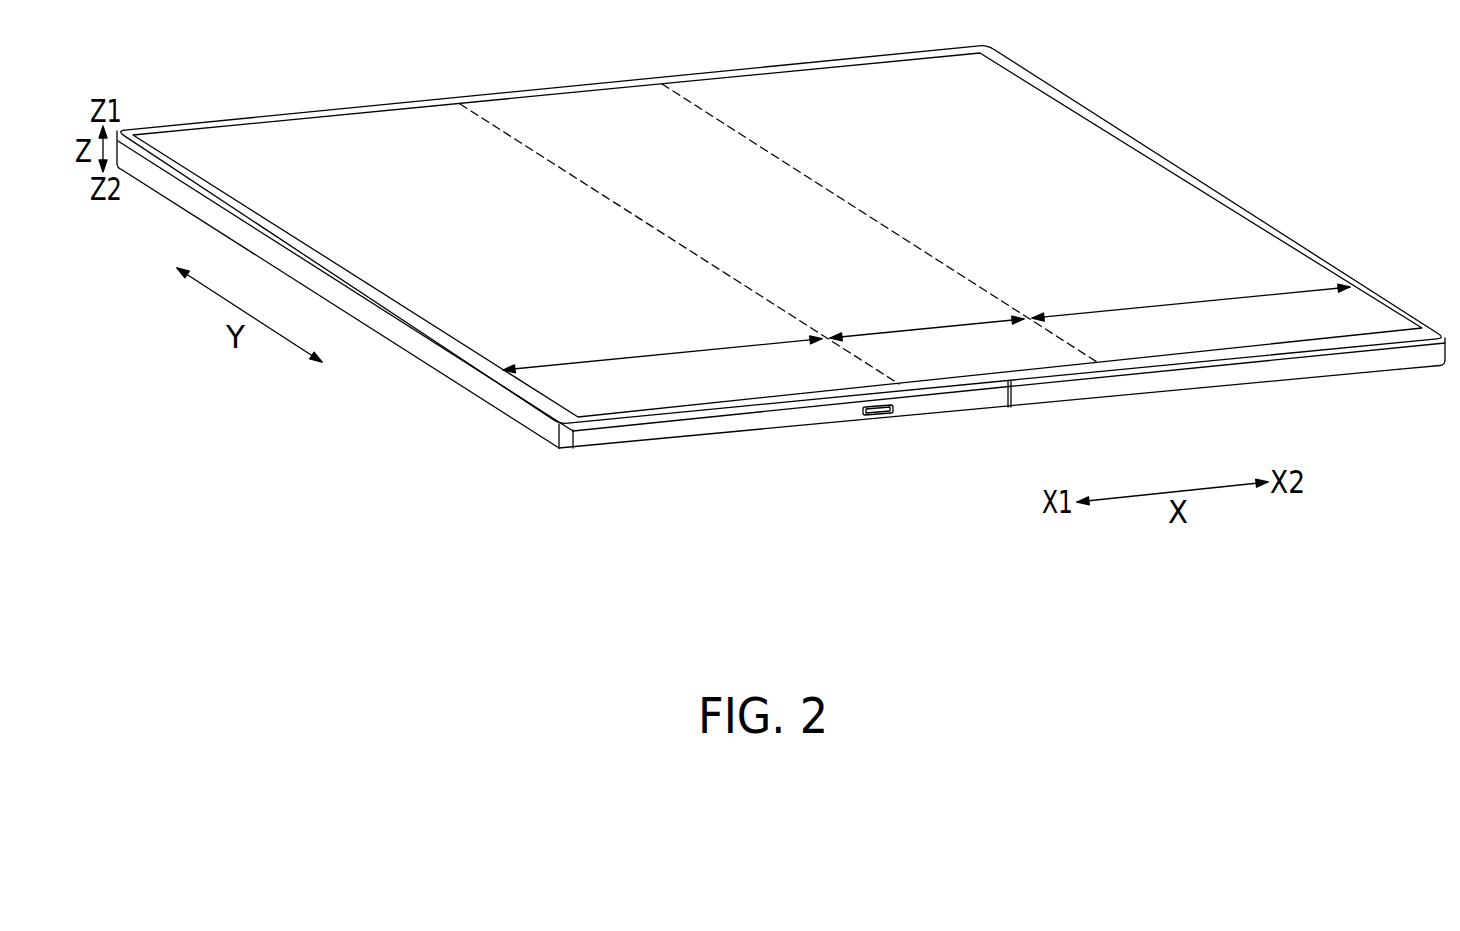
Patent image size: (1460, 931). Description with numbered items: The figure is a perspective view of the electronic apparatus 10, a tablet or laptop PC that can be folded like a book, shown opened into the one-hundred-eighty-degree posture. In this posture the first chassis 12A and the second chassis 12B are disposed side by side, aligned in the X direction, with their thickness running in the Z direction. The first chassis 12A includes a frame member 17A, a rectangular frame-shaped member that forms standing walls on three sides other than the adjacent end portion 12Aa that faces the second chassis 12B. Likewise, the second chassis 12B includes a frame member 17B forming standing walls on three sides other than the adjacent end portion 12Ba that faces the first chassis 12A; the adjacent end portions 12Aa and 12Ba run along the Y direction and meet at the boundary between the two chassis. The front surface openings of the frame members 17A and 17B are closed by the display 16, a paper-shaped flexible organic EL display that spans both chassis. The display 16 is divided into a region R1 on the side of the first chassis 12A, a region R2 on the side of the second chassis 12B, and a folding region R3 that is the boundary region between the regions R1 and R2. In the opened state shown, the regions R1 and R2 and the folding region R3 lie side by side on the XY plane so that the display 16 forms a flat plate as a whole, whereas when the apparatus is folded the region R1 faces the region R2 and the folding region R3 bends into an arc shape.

The electronic apparatus 10 is at (165, 34).
The display 16 is at (1014, 121).
The first chassis 12A is at (712, 441).
The second chassis 12B is at (1338, 383).
The adjacent end portion 12Aa is at (1013, 403).
The adjacent end portion 12Ba is at (1008, 393).
The frame member 17A is at (607, 440).
The frame member 17B is at (1402, 368).
The region R1 is at (662, 346).
The region R2 is at (1191, 294).
The folding region R3 is at (927, 317).